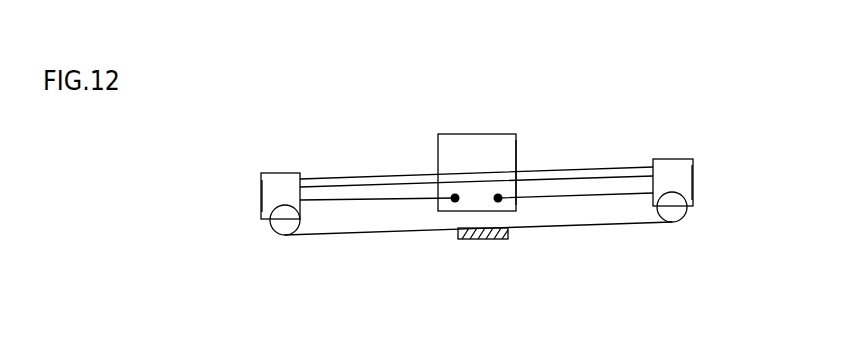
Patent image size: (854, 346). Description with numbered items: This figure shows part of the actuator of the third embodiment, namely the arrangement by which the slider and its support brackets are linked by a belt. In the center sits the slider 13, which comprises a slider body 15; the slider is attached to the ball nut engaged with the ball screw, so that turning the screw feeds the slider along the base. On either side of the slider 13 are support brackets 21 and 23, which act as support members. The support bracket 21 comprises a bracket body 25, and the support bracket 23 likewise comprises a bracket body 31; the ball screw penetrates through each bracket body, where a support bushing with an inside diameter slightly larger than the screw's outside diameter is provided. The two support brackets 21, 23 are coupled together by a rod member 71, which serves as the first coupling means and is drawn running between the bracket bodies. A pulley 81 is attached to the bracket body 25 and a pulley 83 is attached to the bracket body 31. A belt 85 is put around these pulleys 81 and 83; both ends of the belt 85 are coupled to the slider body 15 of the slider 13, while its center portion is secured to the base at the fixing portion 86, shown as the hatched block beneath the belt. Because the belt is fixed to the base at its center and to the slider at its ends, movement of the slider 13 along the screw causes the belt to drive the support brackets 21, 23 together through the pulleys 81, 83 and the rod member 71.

The slider 13 is at (483, 133).
The slider body 15 is at (516, 152).
The support bracket 21 is at (280, 172).
The support bracket 23 is at (682, 158).
The bracket body 25 is at (260, 197).
The bracket body 31 is at (688, 180).
The rod member 71 is at (342, 180).
The pulley 81 is at (272, 235).
The pulley 83 is at (672, 213).
The belt 85 is at (410, 232).
The fixing portion 86 is at (480, 242).